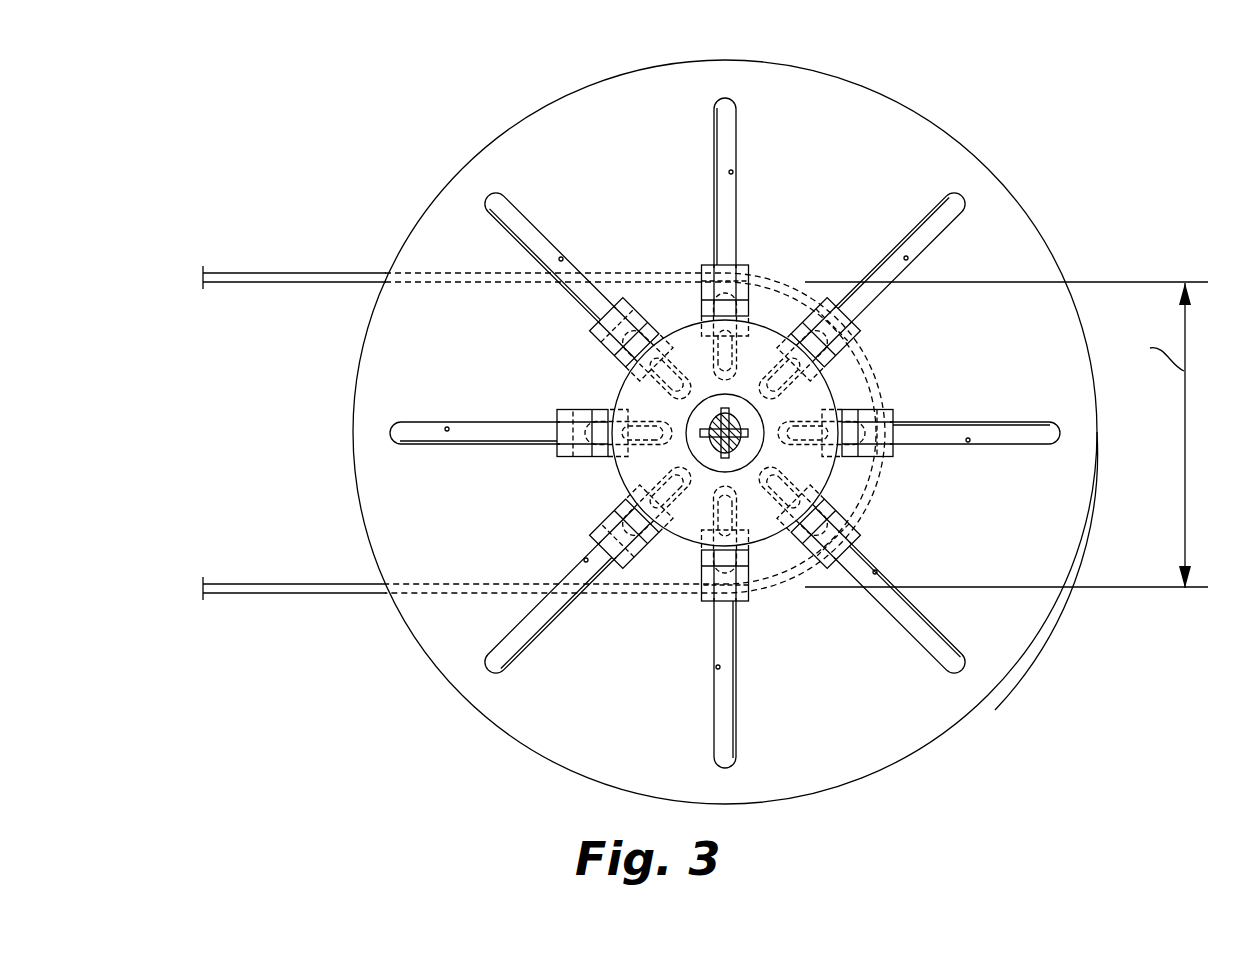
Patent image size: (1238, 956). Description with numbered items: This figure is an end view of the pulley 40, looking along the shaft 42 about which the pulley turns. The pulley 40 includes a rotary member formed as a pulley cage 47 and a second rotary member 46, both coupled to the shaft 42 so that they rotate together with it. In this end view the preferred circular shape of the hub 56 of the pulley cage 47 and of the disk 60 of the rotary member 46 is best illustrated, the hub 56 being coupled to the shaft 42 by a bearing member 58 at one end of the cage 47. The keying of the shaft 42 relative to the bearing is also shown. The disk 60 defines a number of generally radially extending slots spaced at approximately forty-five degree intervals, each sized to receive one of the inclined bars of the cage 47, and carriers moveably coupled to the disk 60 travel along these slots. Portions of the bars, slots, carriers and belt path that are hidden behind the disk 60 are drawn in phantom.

The plant support/trellis assembly 40 is at (1107, 205).
The central hub 42 is at (738, 447).
The circular frame 46 is at (556, 93).
The inner ring 47 is at (615, 468).
The ring member 56 is at (828, 497).
The hub collar 58 is at (730, 396).
The outer circle 60 is at (1077, 557).